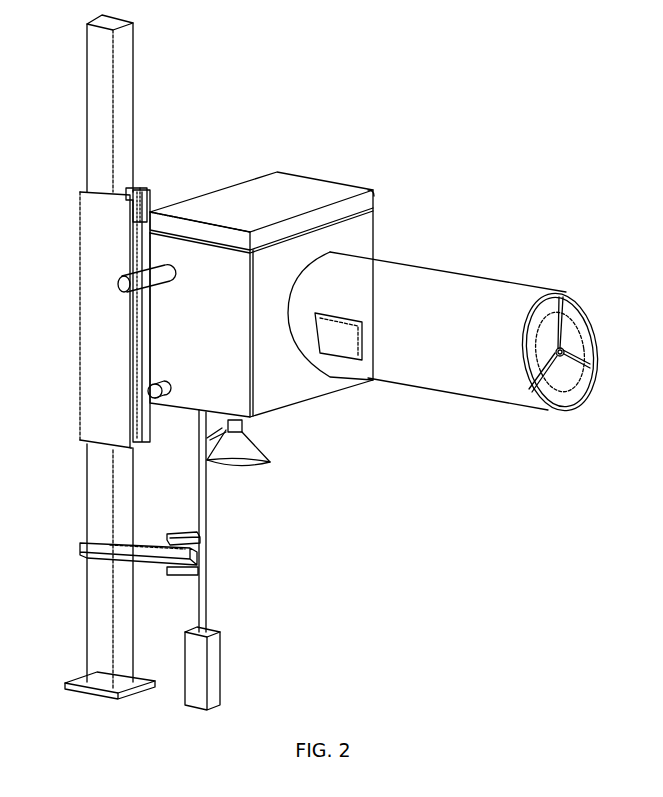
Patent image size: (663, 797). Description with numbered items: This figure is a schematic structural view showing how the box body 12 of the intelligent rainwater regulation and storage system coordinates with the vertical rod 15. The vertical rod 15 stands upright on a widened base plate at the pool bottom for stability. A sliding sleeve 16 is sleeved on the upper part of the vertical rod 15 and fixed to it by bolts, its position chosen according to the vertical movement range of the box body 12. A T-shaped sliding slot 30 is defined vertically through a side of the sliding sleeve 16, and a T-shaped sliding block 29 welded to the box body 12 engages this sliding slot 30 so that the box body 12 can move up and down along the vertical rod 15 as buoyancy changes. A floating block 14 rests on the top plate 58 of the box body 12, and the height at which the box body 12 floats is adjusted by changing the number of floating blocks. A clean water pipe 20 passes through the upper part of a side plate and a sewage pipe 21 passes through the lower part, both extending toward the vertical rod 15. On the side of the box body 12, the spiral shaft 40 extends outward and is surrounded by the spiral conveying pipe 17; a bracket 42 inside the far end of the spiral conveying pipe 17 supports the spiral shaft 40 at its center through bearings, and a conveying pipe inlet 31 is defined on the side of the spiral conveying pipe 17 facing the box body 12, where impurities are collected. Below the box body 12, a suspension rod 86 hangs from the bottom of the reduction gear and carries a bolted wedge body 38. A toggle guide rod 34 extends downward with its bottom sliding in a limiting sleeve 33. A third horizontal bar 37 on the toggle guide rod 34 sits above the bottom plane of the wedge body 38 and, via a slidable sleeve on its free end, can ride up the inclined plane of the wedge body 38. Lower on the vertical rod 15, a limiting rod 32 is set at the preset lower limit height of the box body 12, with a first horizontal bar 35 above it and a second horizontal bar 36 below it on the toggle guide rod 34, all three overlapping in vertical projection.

The box body 12 is at (383, 222).
The floating block 14 is at (287, 185).
The vertical rod 15 is at (122, 62).
The sliding sleeve 16 is at (95, 225).
The spiral conveying pipe 17 is at (482, 292).
The clean water pipe 20 is at (130, 282).
The sewage pipe 21 is at (150, 388).
The sliding block 29 is at (150, 222).
The sliding slot 30 is at (138, 190).
The conveying pipe inlet 31 is at (360, 365).
The limiting rod 32 is at (128, 556).
The limiting sleeve 33 is at (215, 650).
The toggle guide rod 34 is at (207, 506).
The first horizontal bar 35 is at (200, 537).
The second horizontal bar 36 is at (205, 568).
The third horizontal bar 37 is at (223, 435).
The wedge body 38 is at (268, 462).
The spiral shaft 40 is at (567, 305).
The bracket 42 is at (548, 405).
The top plate 58 is at (375, 192).
The suspension rod 86 is at (243, 425).